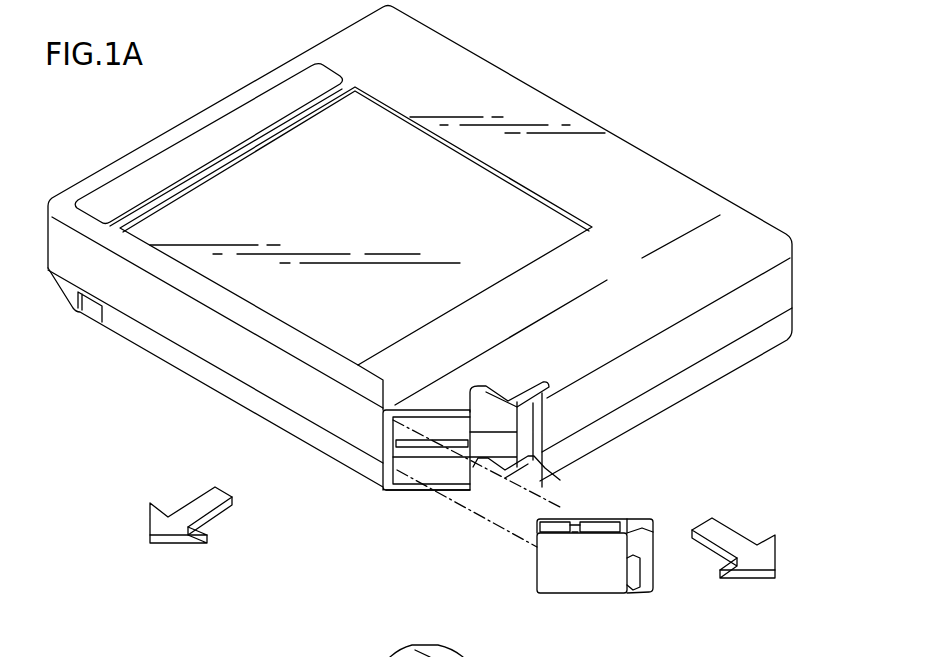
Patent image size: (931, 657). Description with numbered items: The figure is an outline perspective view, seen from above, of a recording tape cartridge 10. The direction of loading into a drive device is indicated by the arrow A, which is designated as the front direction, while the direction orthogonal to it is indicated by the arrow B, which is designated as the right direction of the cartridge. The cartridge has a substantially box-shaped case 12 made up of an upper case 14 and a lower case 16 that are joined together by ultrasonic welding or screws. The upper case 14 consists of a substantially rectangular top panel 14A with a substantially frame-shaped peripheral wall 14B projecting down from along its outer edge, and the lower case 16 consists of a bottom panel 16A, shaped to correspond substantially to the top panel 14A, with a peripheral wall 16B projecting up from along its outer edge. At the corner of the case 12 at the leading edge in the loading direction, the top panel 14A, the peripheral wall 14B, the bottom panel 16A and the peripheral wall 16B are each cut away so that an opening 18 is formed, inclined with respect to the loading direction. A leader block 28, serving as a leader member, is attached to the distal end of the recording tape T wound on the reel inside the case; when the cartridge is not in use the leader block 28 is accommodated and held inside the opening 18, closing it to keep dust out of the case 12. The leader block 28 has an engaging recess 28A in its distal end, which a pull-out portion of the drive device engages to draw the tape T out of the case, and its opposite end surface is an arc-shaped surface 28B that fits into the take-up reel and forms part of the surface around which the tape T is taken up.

The recording tape cartridge 10 is at (615, 97).
The case 12 is at (745, 390).
The upper case 14 is at (652, 367).
The top panel 14A is at (680, 200).
The peripheral wall 14B is at (275, 378).
The lower case 16 is at (650, 403).
The bottom panel 16A is at (405, 480).
The peripheral wall 16B is at (305, 428).
The opening 18 is at (437, 427).
The leader block 28 is at (582, 598).
The engaging recess 28A is at (637, 573).
The arc-shaped surface 28B is at (543, 513).
The recording tape T is at (512, 512).
The arrow A is at (727, 537).
The arrow B is at (200, 505).